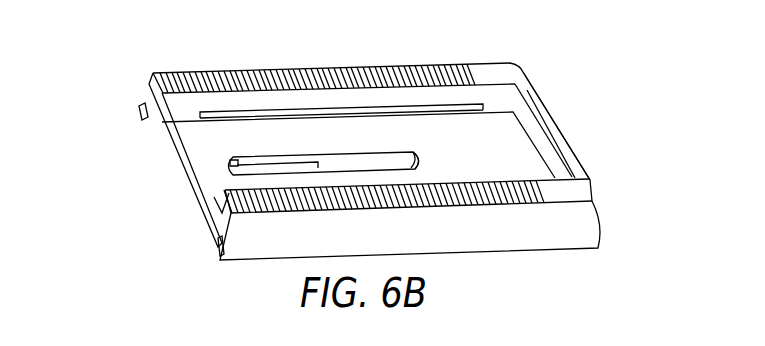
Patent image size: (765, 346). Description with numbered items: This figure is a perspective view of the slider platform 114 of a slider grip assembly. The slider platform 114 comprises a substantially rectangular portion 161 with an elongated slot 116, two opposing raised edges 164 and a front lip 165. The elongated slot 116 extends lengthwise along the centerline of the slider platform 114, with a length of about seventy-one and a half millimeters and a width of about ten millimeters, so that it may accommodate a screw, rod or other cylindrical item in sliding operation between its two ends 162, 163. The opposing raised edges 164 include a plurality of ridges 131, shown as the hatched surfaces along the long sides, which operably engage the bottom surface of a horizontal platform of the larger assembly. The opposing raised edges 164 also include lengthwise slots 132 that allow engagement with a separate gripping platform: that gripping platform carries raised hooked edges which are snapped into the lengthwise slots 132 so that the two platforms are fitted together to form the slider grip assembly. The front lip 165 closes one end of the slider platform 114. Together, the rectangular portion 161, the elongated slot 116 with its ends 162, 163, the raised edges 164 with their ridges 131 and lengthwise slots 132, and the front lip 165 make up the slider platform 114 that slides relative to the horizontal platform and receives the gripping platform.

The slider platform 114 is at (146, 151).
The ridges 131 is at (330, 72).
The lengthwise slots 132 is at (433, 112).
The substantially rectangular portion 161 is at (218, 138).
The elongated slot 116 is at (334, 166).
The slot end 162 is at (414, 153).
The slot end 163 is at (232, 162).
The opposing raised edges 164 is at (151, 93).
The front lip 165 is at (557, 132).